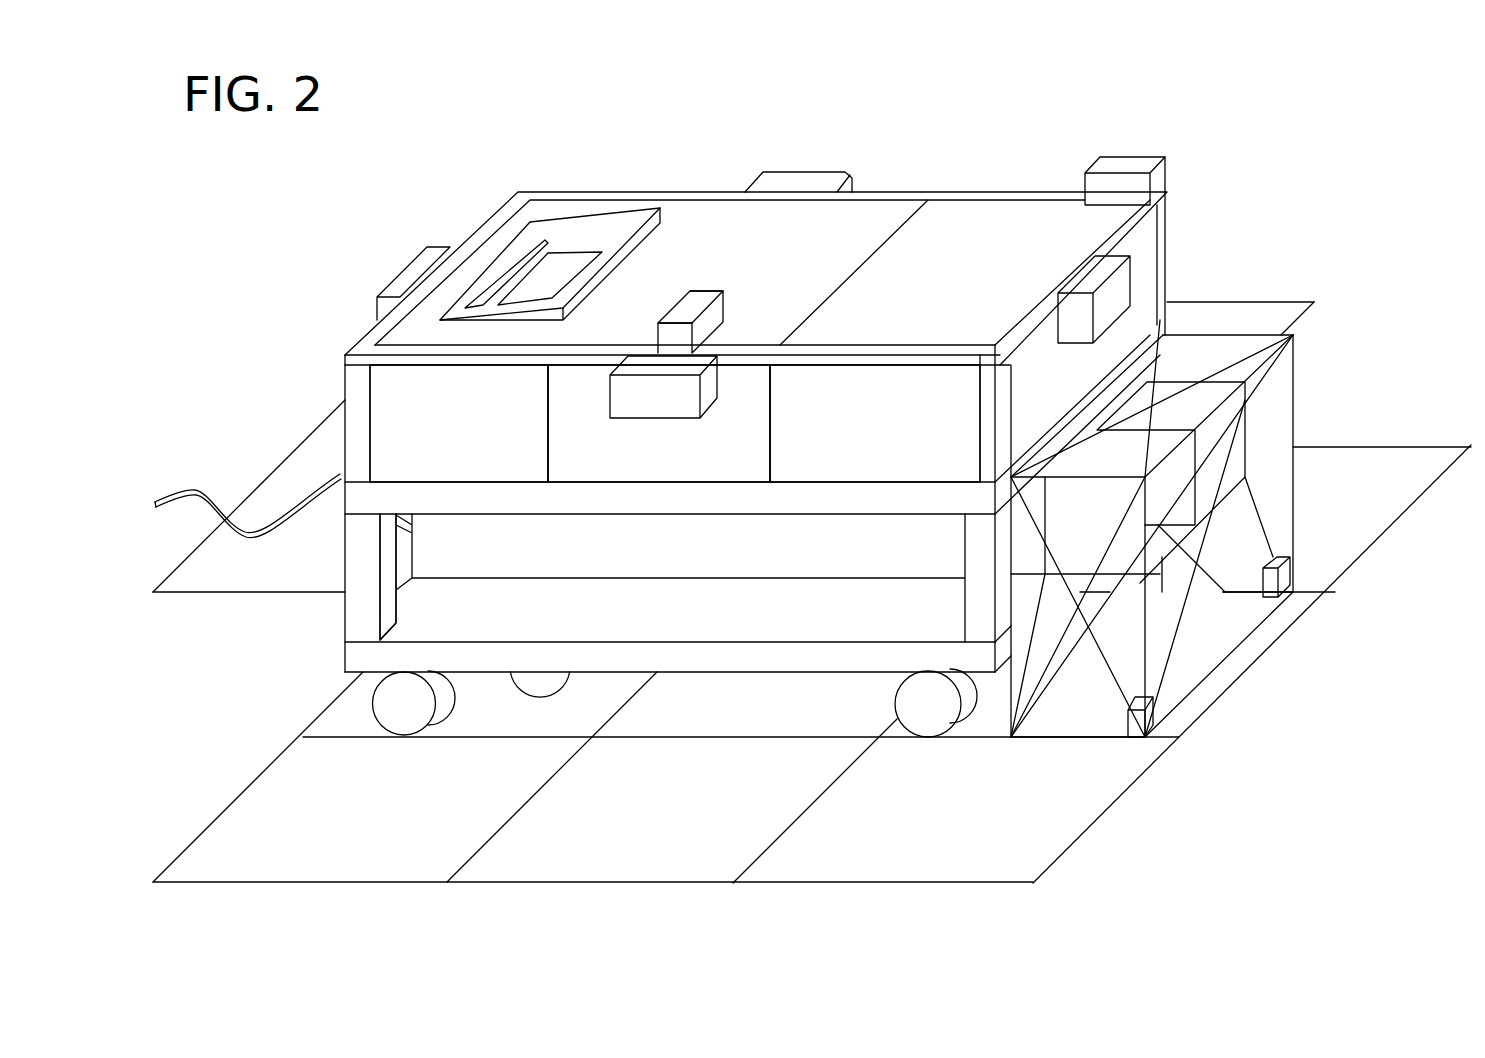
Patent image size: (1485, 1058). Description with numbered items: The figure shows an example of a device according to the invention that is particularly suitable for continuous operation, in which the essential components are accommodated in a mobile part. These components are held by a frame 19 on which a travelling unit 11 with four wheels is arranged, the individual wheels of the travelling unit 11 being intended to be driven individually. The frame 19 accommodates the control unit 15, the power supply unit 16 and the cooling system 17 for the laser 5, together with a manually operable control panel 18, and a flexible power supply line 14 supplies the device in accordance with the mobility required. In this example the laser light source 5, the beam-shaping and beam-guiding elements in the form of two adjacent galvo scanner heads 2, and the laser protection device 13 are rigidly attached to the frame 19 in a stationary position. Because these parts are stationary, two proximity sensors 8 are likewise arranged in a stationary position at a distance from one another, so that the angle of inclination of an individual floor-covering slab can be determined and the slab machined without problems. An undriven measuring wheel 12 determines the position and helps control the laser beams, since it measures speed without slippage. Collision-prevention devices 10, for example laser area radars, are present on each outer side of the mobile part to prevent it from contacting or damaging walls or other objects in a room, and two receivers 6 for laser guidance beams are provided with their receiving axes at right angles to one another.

The galvo scanner heads 2 is at (1220, 442).
The laser 5 is at (707, 556).
The receivers for laser guidance beams 6 is at (713, 320).
The proximity sensors 8 is at (1282, 570).
The collision-prevention devices 10 is at (623, 390).
The travelling unit 11 is at (403, 703).
The measuring wheel 12 is at (542, 686).
The laser protection device 13 is at (1293, 418).
The power supply line 14 is at (210, 492).
The control unit 15 is at (473, 434).
The power supply unit 16 is at (665, 466).
The cooling system 17 is at (881, 434).
The control panel 18 is at (575, 232).
The frame 19 is at (360, 612).